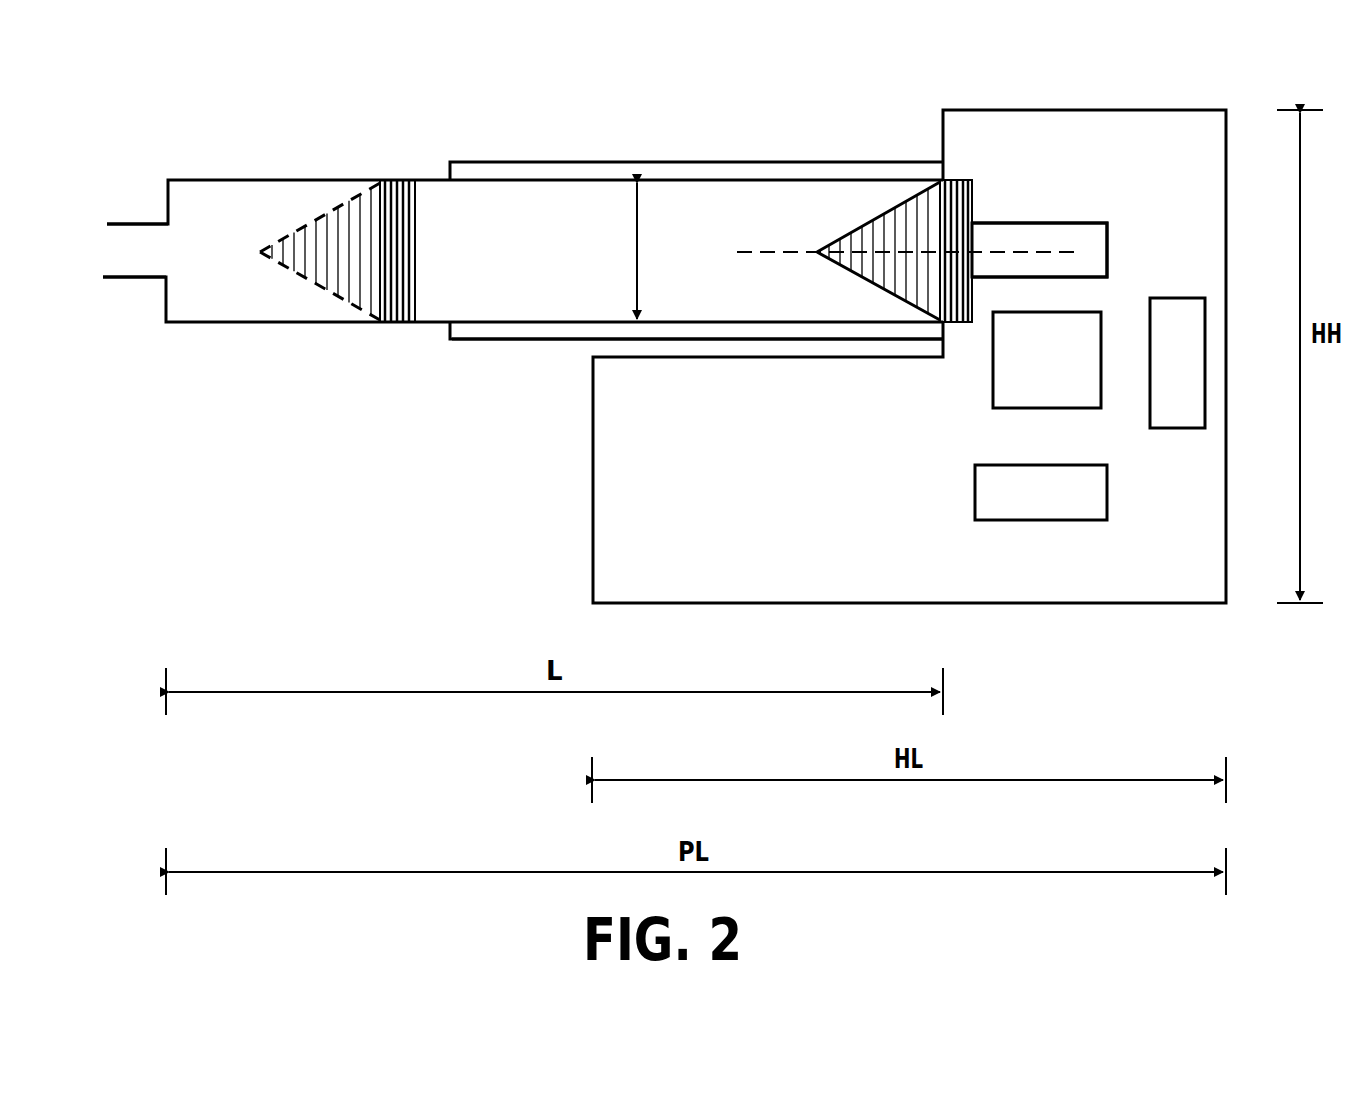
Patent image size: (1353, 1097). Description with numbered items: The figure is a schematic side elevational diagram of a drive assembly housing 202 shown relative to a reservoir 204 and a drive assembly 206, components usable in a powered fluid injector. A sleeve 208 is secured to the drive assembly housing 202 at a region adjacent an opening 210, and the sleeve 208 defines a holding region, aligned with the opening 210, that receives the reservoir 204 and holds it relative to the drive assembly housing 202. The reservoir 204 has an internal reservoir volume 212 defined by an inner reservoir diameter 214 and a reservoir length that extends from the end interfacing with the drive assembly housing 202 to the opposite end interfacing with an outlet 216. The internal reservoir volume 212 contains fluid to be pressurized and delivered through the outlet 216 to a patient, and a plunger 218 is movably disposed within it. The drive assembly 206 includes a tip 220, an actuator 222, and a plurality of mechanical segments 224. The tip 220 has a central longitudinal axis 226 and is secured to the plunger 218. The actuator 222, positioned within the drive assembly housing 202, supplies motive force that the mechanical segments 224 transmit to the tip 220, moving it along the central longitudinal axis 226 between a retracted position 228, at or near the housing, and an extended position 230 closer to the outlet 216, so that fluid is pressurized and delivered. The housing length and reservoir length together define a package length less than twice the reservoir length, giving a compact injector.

The drive assembly housing 202 is at (1172, 110).
The reservoir 204 is at (552, 180).
The drive assembly 206 is at (1085, 180).
The sleeve 208 is at (553, 340).
The opening 210 is at (402, 178).
The internal reservoir volume 212 is at (500, 262).
The inner reservoir diameter 214 is at (636, 240).
The outlet 216 is at (132, 279).
The plunger 218 is at (308, 220).
The tip 220 is at (963, 180).
The actuator 222 is at (993, 368).
The mechanical segments 224 is at (1017, 223).
The central longitudinal axis 226 is at (767, 248).
The retracted position 228 is at (902, 193).
The extended position 230 is at (340, 202).